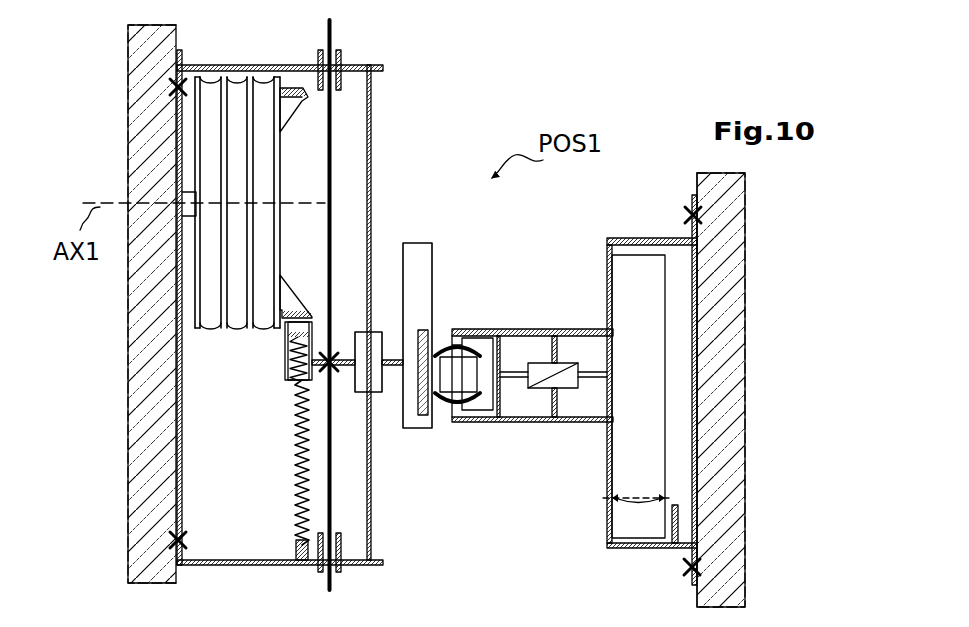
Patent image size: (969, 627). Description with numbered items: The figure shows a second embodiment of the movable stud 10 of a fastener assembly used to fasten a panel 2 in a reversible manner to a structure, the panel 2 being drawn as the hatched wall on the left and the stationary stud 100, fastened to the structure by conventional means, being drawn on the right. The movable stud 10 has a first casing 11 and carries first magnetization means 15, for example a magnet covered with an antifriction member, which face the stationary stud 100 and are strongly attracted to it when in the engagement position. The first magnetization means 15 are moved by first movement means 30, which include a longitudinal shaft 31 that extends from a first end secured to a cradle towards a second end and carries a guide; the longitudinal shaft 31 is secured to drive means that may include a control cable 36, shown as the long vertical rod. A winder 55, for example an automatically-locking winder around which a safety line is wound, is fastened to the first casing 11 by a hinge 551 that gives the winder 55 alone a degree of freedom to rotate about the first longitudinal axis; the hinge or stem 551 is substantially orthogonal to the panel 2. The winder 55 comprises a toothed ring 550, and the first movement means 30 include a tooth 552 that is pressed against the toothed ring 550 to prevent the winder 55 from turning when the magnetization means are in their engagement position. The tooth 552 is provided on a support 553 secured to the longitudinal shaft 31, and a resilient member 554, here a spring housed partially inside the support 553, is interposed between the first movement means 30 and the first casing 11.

The panel 2 is at (147, 322).
The movable stud 10 is at (256, 584).
The first casing 11 is at (307, 169).
The first magnetization means 15 is at (423, 403).
The first movement means 30 is at (383, 406).
The longitudinal shaft 31 is at (347, 360).
The control cable 36 is at (331, 580).
The winder 55 is at (277, 152).
The stationary stud 100 is at (637, 552).
The toothed ring 550 is at (288, 110).
The hinge 551 is at (190, 192).
The tooth 552 is at (308, 318).
The support 553 is at (285, 352).
The resilient member 554 is at (295, 460).